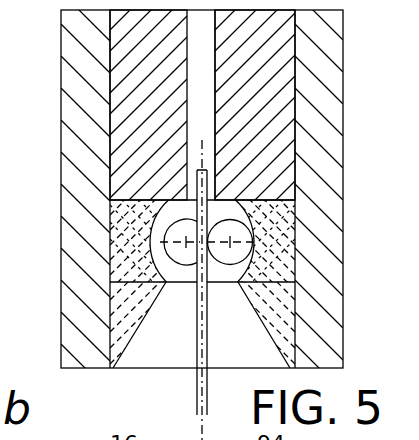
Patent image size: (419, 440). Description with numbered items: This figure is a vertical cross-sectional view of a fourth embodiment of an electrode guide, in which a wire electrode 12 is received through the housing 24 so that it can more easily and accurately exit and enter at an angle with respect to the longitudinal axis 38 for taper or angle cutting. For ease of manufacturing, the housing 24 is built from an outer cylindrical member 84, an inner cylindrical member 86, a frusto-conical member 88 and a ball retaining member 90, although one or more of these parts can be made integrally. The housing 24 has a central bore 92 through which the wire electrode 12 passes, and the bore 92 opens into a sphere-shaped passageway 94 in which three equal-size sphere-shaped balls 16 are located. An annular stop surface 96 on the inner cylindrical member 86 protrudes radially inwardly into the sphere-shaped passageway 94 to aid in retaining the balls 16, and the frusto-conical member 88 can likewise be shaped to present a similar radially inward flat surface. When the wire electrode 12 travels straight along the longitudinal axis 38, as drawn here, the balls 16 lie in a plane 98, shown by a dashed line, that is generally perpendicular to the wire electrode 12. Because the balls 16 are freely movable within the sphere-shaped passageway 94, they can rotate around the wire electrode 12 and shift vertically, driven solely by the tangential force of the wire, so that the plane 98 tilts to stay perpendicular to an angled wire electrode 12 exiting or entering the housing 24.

The wire electrode 12 is at (197, 392).
The balls 16 is at (175, 233).
The housing 24 is at (343, 107).
The longitudinal axis 38 is at (202, 158).
The outer cylindrical member 84 is at (324, 217).
The inner cylindrical member 86 is at (280, 58).
The frusto-conical member 88 is at (288, 303).
The ball retaining member 90 is at (266, 261).
The central bore 92 is at (200, 104).
The sphere-shaped passageway 94 is at (168, 268).
The annular stop surface 96 is at (174, 202).
The plane 98 is at (131, 252).